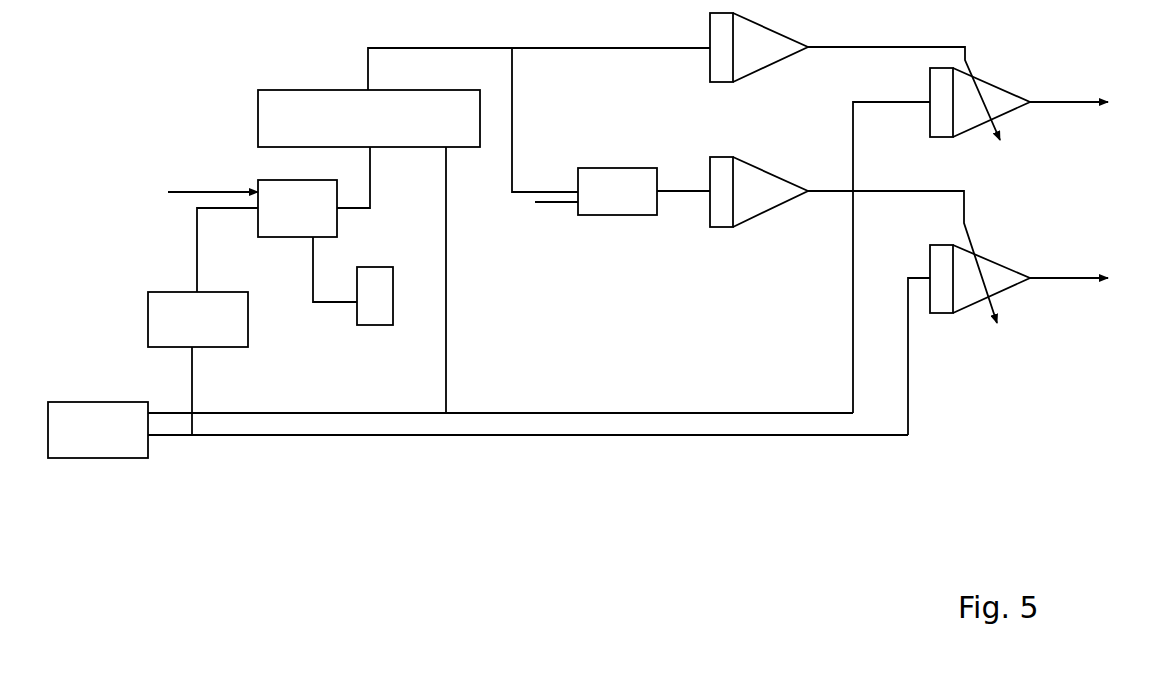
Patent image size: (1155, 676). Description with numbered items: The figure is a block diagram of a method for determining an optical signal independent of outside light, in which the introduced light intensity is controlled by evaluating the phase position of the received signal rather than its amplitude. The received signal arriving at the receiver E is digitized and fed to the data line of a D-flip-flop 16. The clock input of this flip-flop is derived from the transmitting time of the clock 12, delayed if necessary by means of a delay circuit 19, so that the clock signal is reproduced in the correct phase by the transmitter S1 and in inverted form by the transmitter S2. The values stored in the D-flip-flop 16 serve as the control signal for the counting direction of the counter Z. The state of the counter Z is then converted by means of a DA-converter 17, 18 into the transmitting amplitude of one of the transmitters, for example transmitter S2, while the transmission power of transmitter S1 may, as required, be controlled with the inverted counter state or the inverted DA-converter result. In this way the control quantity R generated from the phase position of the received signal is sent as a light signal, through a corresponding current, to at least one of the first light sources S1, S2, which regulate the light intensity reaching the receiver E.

The clock 12 is at (98, 430).
The D-flip-flop 16 is at (375, 296).
The DA-converter 17 is at (759, 47).
The DA-converter 18 is at (759, 192).
The delay circuit 19 is at (198, 319).
The counter Z is at (369, 118).
The receiver E is at (199, 192).
The control quantity R is at (973, 75).
The first light source (transmitter) S1 is at (1038, 279).
The first light source (transmitter) S2 is at (1038, 102).